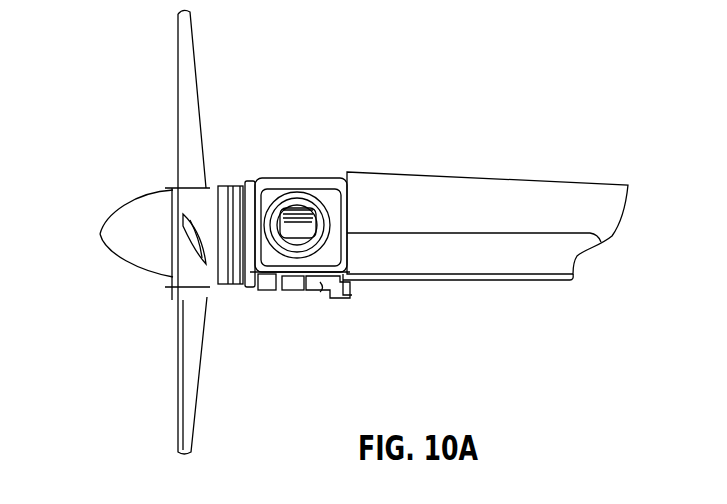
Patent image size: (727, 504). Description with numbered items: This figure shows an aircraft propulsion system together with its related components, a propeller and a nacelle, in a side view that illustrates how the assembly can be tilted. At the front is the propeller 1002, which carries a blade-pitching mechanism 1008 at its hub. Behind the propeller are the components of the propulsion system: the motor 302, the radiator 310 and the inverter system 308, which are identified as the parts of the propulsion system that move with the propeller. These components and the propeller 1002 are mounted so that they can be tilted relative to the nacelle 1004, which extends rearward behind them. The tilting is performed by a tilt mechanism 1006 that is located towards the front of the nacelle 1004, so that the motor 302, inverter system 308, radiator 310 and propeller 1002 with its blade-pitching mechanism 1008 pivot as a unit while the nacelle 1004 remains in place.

The propeller 1002 is at (178, 72).
The blade-pitching mechanism 1008 is at (173, 232).
The motor 302 is at (233, 181).
The radiator 310 is at (250, 180).
The tilt mechanism 1006 is at (310, 202).
The inverter system 308 is at (247, 290).
The nacelle 1004 is at (420, 190).